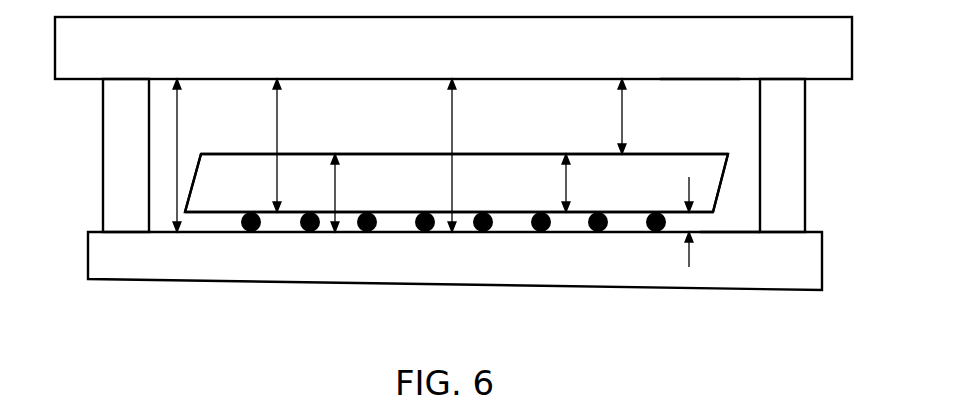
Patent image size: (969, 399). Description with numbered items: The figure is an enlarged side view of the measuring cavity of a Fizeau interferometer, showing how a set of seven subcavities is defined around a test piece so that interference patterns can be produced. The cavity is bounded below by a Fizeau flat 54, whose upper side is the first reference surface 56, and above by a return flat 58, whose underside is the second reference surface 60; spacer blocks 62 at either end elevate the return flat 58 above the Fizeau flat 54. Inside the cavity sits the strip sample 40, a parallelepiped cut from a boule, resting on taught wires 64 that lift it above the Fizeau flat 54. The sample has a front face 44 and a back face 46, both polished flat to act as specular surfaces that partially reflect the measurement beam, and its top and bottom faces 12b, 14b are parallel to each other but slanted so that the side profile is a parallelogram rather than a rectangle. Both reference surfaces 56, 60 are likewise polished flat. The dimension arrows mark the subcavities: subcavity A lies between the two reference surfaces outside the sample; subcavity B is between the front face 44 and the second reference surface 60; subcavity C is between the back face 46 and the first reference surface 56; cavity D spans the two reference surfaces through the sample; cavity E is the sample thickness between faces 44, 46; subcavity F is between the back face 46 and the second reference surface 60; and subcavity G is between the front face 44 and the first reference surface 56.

The return flat 58 is at (371, 54).
The spacer blocks 62 is at (118, 181).
The Fizeau flat 54 is at (491, 270).
The strip sample 40 is at (488, 194).
The back face 46 is at (417, 153).
The front face 44 is at (222, 213).
The bottom face 14b is at (193, 173).
The top face 12b is at (722, 172).
The taught wires 64 is at (303, 233).
The second reference surface 60 is at (698, 80).
The first reference surface 56 is at (740, 232).
The subcavity A is at (177, 128).
The subcavity B is at (277, 138).
The subcavity C is at (335, 195).
The cavity D is at (452, 128).
The cavity E is at (566, 176).
The subcavity F is at (622, 122).
The subcavity G is at (689, 253).